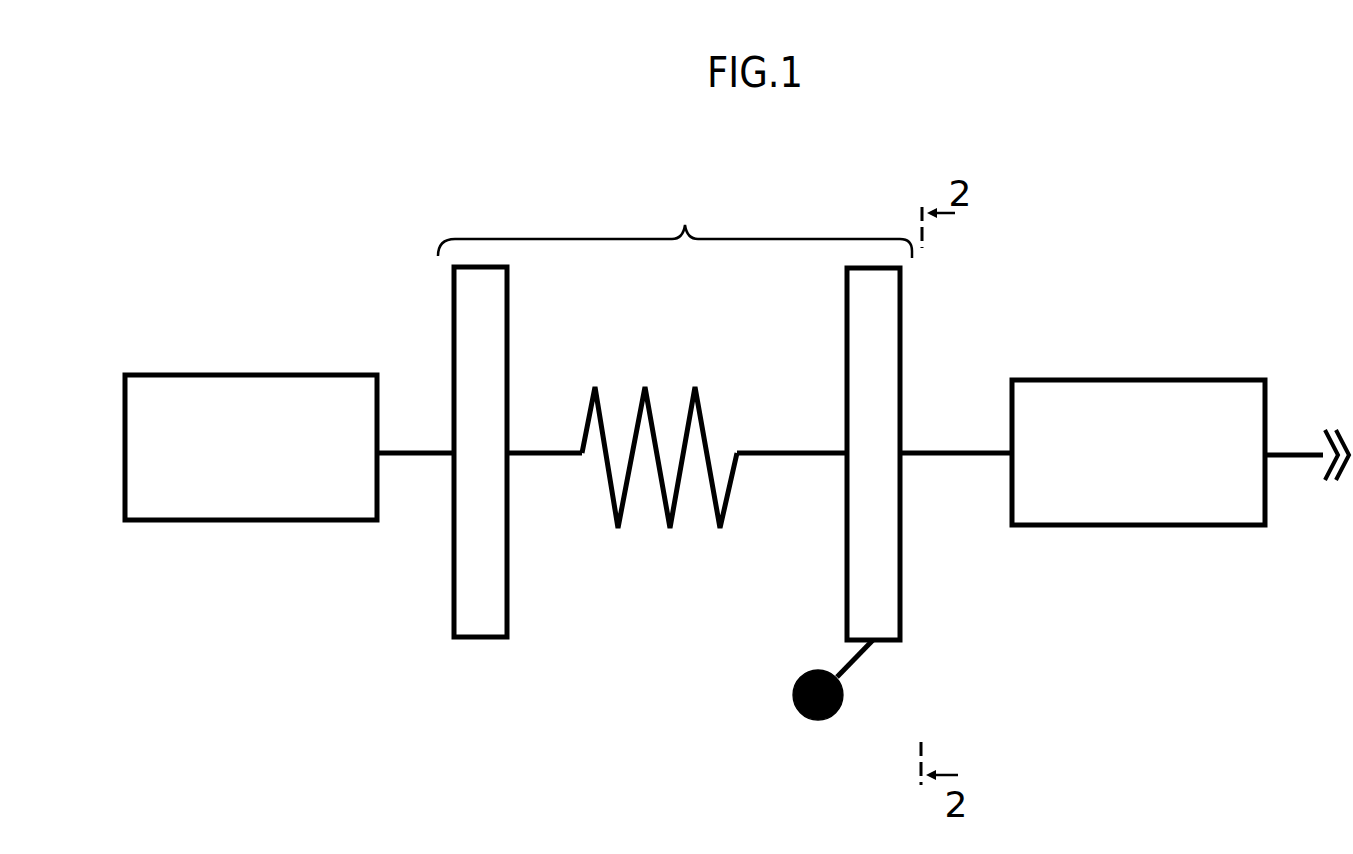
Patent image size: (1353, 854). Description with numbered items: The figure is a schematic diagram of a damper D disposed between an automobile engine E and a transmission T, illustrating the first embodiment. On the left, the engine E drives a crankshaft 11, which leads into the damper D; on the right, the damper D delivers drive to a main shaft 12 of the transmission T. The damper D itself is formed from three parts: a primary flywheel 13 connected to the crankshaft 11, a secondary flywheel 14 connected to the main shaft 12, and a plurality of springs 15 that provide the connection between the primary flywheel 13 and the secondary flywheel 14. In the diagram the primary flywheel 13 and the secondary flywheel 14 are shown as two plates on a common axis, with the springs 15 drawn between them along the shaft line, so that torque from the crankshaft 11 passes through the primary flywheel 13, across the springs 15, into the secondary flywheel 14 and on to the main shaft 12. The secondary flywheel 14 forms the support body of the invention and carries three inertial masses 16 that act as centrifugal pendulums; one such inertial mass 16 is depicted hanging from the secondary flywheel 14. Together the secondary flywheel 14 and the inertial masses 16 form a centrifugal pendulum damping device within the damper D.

The crankshaft 11 is at (434, 447).
The main shaft 12 is at (930, 452).
The primary flywheel 13 is at (497, 358).
The secondary flywheel 14 is at (890, 342).
The springs 15 is at (652, 410).
The inertial mass 16 is at (793, 692).
The damper D is at (706, 414).
The engine E is at (257, 467).
The transmission T is at (1147, 472).